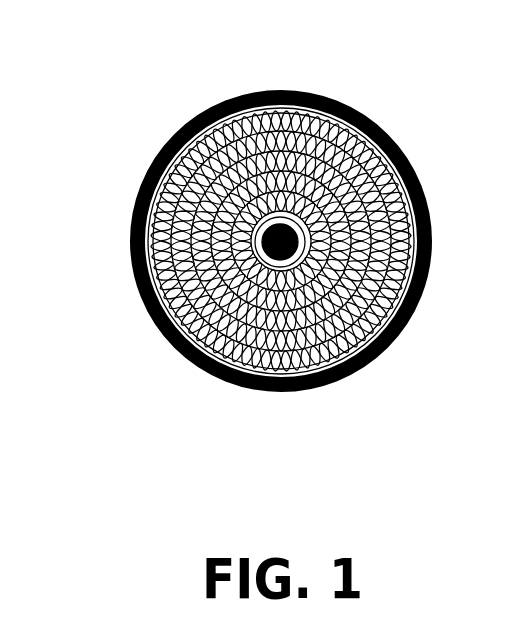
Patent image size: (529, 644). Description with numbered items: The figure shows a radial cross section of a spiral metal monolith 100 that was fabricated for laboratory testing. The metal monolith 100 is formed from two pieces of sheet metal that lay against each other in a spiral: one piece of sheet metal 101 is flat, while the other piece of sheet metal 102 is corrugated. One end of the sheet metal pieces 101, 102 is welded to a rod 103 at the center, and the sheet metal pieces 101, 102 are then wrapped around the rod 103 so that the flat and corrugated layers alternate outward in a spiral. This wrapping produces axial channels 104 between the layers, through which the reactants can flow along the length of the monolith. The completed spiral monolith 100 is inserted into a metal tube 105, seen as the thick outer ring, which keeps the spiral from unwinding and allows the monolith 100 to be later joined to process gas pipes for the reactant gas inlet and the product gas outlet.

The spiral metal monolith 100 is at (249, 282).
The flat sheet metal piece 101 is at (390, 310).
The corrugated sheet metal piece 102 is at (255, 113).
The rod 103 is at (288, 232).
The axial channels 104 is at (152, 268).
The metal tube 105 is at (177, 357).